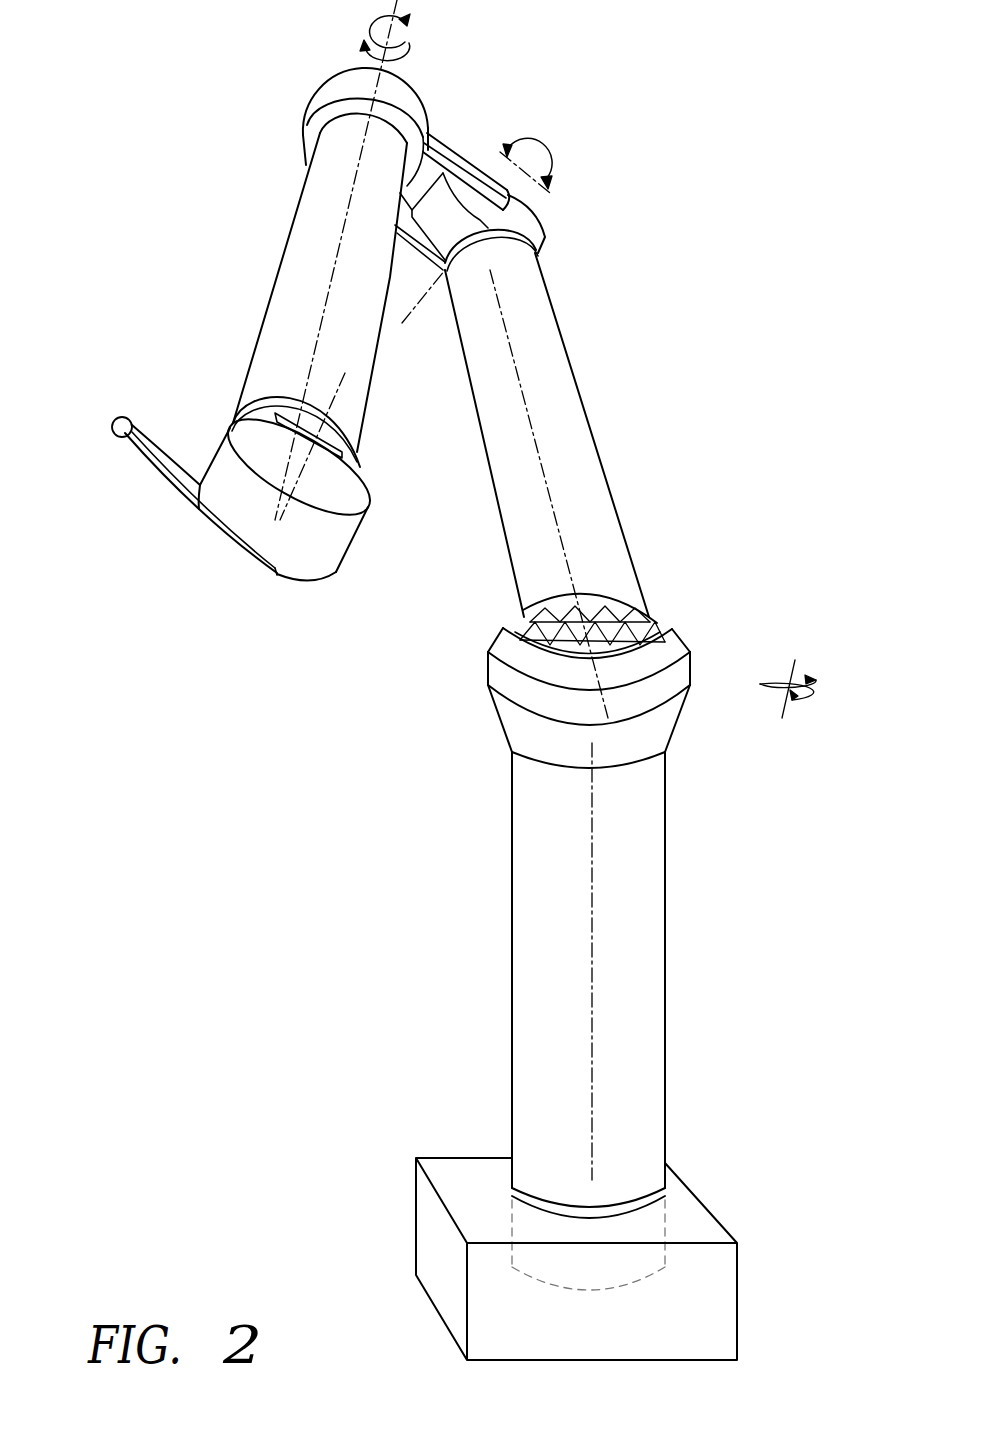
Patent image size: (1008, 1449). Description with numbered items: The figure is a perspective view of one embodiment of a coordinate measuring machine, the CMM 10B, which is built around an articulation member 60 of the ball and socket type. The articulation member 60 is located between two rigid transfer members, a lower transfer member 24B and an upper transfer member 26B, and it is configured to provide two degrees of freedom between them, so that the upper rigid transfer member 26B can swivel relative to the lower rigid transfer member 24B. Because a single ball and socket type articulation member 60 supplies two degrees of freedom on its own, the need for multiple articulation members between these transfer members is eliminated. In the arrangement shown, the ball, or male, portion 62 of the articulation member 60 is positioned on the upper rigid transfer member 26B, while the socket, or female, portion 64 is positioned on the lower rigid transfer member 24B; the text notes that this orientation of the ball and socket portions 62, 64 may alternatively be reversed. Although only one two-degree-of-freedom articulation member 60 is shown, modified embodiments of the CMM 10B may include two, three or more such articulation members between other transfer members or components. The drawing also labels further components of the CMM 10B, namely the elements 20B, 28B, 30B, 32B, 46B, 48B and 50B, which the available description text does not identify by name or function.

The CMM 10B is at (786, 230).
The base 20B is at (707, 1202).
The transfer member 24B is at (638, 967).
The transfer member 26B is at (537, 330).
The third arm segment 28B is at (309, 249).
The probe 30B is at (157, 478).
The probe tip 32B is at (118, 445).
The second joint 46B is at (537, 221).
The third joint 48B is at (332, 94).
The probe housing 50B is at (338, 537).
The articulation member 60 is at (702, 642).
The ball portion 62 is at (528, 612).
The socket portion 64 is at (520, 660).